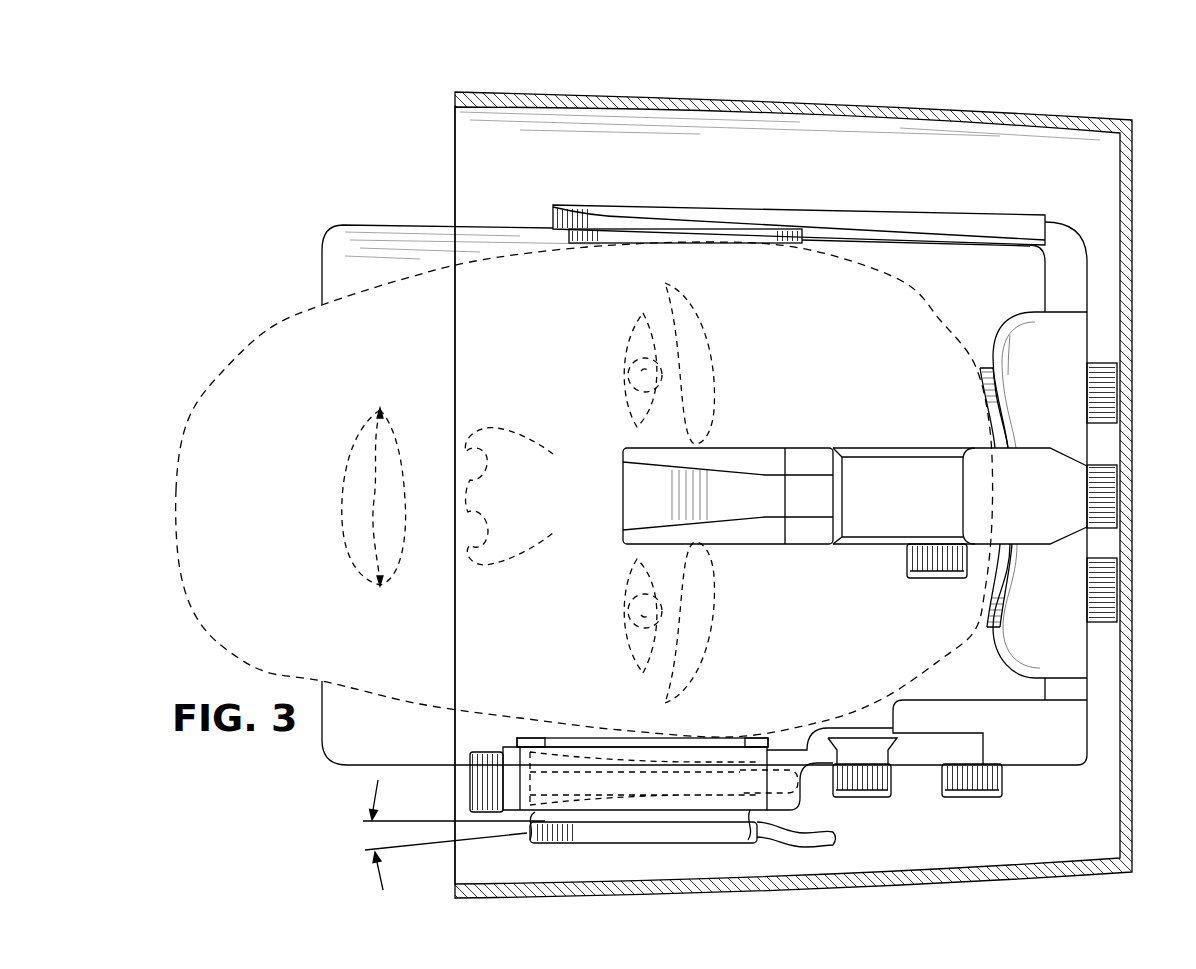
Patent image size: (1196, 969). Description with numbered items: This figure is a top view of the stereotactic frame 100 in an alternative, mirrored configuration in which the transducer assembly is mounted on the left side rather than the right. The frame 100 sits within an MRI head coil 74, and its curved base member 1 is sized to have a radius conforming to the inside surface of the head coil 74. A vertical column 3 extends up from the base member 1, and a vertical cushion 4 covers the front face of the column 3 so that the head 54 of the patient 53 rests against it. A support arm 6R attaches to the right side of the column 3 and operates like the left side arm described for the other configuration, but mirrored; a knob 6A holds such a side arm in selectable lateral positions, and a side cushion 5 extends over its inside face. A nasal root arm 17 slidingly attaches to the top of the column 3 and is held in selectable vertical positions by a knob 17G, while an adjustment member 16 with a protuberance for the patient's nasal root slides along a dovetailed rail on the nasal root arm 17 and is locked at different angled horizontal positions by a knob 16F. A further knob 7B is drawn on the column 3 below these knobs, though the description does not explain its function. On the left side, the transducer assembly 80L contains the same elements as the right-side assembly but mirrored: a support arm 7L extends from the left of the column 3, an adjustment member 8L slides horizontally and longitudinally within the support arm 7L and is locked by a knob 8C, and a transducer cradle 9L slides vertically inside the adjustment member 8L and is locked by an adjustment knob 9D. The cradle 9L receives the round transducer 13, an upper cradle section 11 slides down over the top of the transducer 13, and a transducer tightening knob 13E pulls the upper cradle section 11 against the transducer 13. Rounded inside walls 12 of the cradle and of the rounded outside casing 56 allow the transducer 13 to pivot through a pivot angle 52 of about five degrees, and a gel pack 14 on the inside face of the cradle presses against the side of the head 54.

The stereotactic frame 100 is at (410, 111).
The MRI head coil 74 is at (792, 92).
The base member 1 is at (322, 282).
The support arm 6R is at (691, 204).
The side cushion 5 is at (639, 244).
The patient 53 is at (236, 331).
The head 54 is at (218, 372).
The adjustment member 16 is at (738, 455).
The nasal root arm 17 is at (873, 462).
The knob 16F is at (937, 580).
The knob 6A is at (1105, 424).
The knob 17G is at (1108, 528).
The lower adjustment knob 7B is at (1108, 623).
The vertical column 3 is at (1005, 320).
The vertical cushion 4 is at (990, 412).
The transducer assembly 80L is at (1002, 816).
The support arm 7L is at (1043, 768).
The adjustment member 8L is at (918, 752).
The transducer cradle 9L is at (797, 750).
The adjustment knob 9D is at (862, 800).
The knob 8C is at (970, 800).
The upper cradle section 11 is at (712, 745).
The gel pack 14 is at (620, 740).
The rounded inside walls 12 is at (535, 748).
The transducer tightening knob 13E is at (468, 782).
The transducer 13 is at (650, 845).
The casing 56 is at (528, 820).
The pivot angle 52 is at (375, 873).